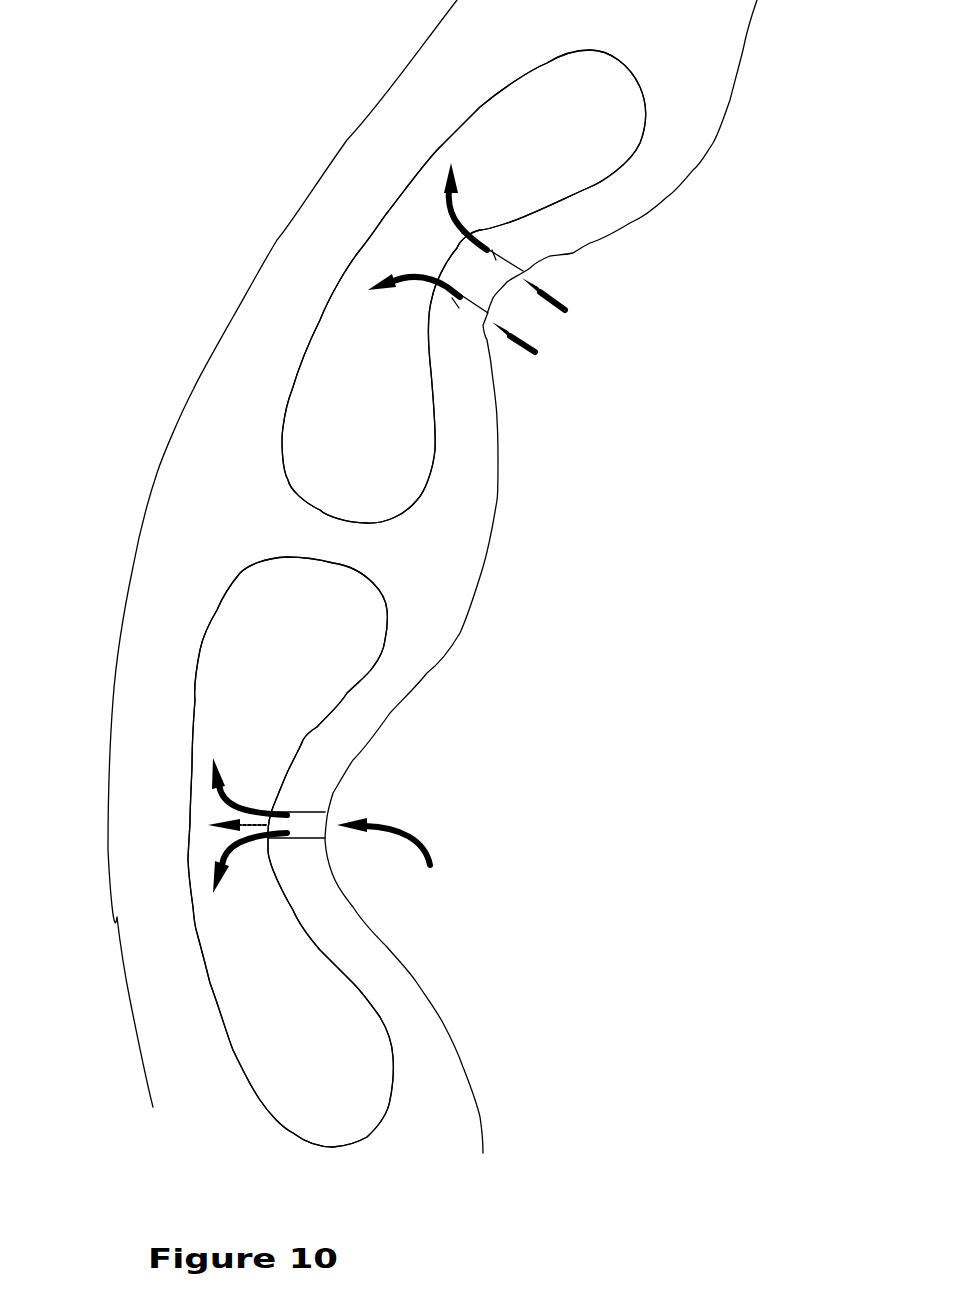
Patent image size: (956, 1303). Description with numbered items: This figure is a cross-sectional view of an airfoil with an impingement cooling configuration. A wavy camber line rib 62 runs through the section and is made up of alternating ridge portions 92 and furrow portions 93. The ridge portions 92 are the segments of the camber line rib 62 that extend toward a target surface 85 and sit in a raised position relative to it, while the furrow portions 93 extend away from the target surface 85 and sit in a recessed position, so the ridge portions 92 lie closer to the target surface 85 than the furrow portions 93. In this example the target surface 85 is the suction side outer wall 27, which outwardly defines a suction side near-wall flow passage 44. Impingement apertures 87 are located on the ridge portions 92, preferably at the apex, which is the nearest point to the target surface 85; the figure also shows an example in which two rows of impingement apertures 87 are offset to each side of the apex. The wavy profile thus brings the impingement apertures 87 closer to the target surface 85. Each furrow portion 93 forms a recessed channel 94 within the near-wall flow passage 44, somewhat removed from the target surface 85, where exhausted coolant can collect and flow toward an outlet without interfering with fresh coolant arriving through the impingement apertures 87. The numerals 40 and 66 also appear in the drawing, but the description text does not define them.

The suction side outer wall 27 is at (311, 249).
The cooling passage 40 is at (339, 414).
The suction side near-wall flow passage 44 is at (524, 131).
The camber line rib 62 is at (463, 384).
The bend / turn region 66 is at (304, 549).
The target surface 85 is at (360, 253).
The impingement apertures 87 is at (497, 255).
The ridge portions 92 is at (463, 268).
The furrow portions 93 is at (682, 160).
The channel 94 is at (579, 159).